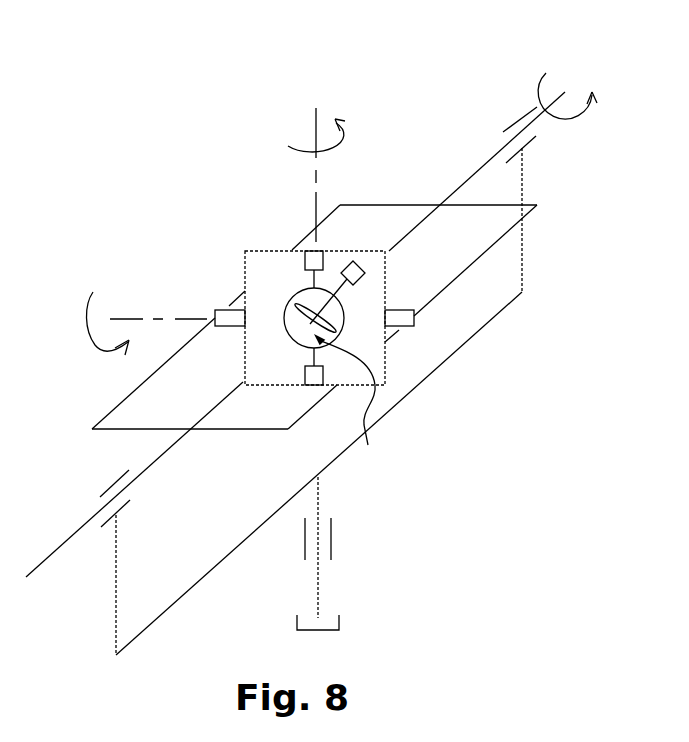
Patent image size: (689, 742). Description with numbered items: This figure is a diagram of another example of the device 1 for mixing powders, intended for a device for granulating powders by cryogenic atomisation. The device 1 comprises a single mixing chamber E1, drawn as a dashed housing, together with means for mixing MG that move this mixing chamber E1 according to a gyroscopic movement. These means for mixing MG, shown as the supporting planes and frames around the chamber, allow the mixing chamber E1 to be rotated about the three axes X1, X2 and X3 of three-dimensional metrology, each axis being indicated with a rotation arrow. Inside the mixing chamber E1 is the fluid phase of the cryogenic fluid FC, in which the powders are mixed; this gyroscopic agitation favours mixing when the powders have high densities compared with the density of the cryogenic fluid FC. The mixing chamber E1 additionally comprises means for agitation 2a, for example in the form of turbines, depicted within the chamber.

The device for mixing powders 1 is at (74, 201).
The means for agitation 2a is at (327, 307).
The mixing chamber E1 is at (300, 294).
The cryogenic fluid FC is at (350, 403).
The means for mixing MG is at (132, 403).
The axis X1 is at (565, 90).
The axis X2 is at (160, 318).
The axis X3 is at (313, 129).